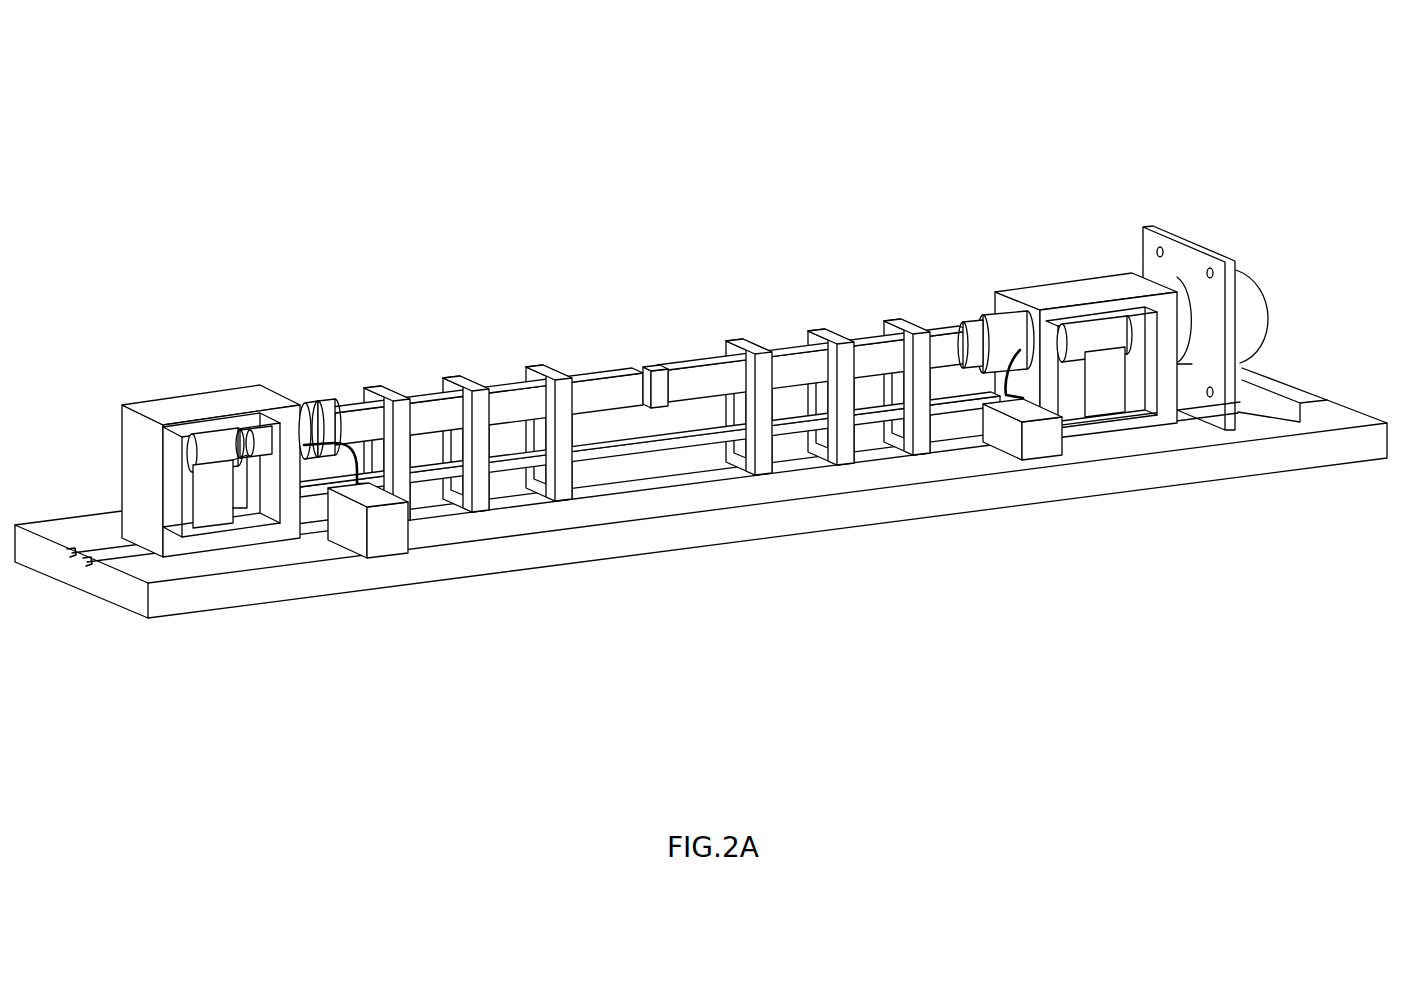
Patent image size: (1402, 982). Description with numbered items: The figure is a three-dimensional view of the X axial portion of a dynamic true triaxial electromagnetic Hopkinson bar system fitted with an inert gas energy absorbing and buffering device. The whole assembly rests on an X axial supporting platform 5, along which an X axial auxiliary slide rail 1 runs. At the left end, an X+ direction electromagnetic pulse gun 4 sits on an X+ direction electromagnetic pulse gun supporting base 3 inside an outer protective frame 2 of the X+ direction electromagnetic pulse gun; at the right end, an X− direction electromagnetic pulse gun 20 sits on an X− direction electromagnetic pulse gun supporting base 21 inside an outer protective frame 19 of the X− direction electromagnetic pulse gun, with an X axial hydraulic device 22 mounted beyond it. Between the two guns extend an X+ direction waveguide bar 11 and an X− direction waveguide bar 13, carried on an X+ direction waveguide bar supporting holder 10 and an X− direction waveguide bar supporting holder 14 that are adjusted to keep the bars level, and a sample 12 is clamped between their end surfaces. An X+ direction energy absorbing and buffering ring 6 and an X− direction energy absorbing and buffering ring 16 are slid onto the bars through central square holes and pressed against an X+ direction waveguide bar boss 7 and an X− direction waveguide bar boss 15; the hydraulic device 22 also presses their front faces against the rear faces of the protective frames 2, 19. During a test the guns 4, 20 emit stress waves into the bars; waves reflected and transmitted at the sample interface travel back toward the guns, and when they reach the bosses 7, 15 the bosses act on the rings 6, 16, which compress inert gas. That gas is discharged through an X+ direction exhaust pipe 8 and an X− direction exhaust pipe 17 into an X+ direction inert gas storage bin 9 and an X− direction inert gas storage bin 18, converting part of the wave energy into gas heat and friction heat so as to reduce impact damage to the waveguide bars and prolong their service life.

The X axial auxiliary slide rail 1 is at (75, 560).
The outer protective frame of X+ direction electromagnetic pulse gun 2 is at (165, 548).
The X+ direction electromagnetic pulse gun supporting base 3 is at (212, 510).
The X+ direction electromagnetic pulse gun 4 is at (197, 450).
The X axial supporting platform 5 is at (268, 580).
The X+ direction energy absorbing and buffering ring 6 is at (305, 420).
The X+ direction waveguide bar boss 7 is at (328, 418).
The X+ direction exhaust pipe 8 is at (352, 480).
The X+ direction inert gas storage bin 9 is at (383, 540).
The X+ direction waveguide bar supporting holder 10 is at (403, 410).
The X+ direction waveguide bar 11 is at (503, 420).
The sample 12 is at (648, 385).
The X− direction waveguide bar 13 is at (797, 370).
The X− direction waveguide bar supporting holder 14 is at (848, 350).
The X− direction waveguide bar boss 15 is at (977, 335).
The X− direction energy absorbing and buffering ring 16 is at (1017, 340).
The X− direction exhaust pipe 17 is at (1000, 400).
The X− direction inert gas storage bin 18 is at (1040, 440).
The outer protective frame of X− direction electromagnetic pulse gun 19 is at (1115, 425).
The X− direction electromagnetic pulse gun 20 is at (1077, 330).
The X− direction electromagnetic pulse gun supporting base 21 is at (1105, 360).
The X axial hydraulic device 22 is at (1208, 315).